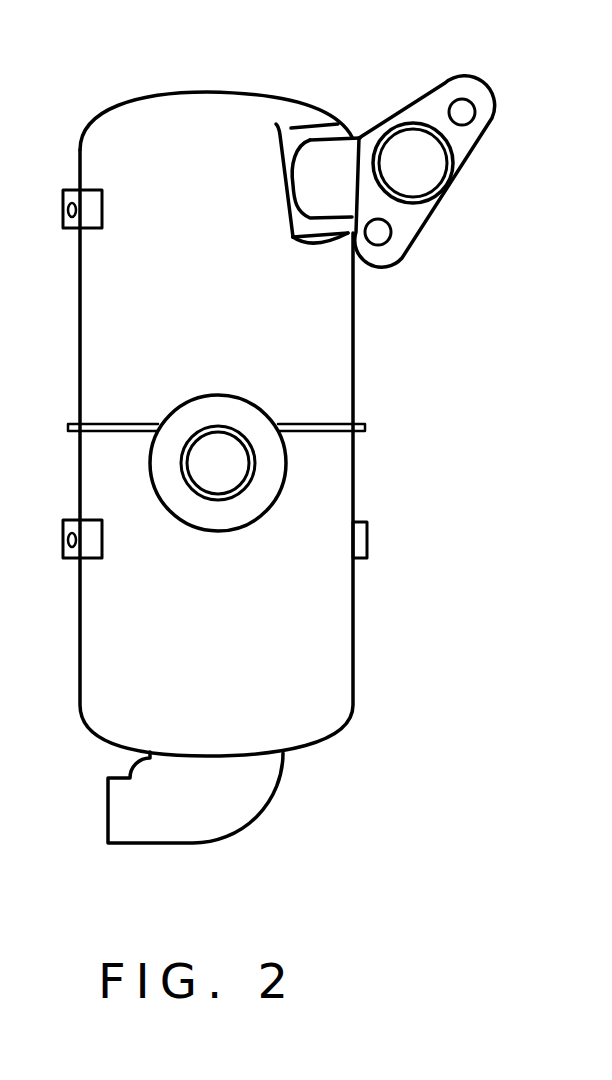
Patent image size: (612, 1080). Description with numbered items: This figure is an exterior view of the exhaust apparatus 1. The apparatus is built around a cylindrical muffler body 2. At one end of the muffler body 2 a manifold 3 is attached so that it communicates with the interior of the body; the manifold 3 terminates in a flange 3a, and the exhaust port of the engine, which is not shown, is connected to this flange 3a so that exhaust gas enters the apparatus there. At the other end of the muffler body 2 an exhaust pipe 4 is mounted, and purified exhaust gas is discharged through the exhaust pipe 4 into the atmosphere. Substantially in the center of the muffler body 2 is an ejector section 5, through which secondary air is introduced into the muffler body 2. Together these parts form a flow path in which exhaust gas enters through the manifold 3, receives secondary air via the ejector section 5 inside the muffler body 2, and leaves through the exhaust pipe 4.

The exhaust apparatus 1 is at (298, 73).
The muffler body 2 is at (354, 368).
The manifold 3 is at (330, 147).
The flange 3a is at (420, 104).
The exhaust pipe 4 is at (233, 821).
The ejector section 5 is at (242, 397).